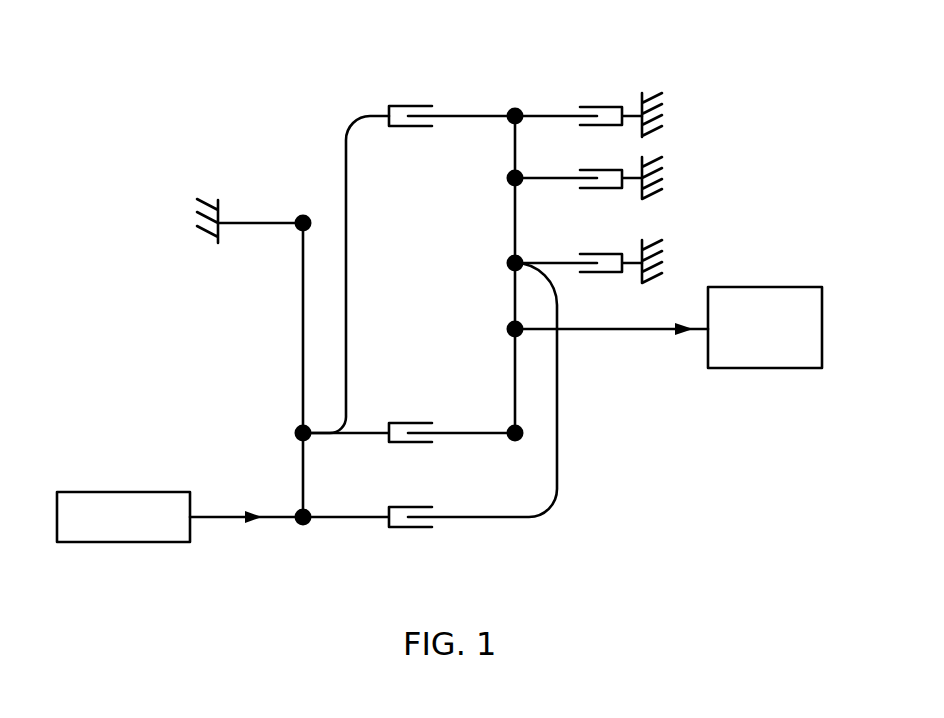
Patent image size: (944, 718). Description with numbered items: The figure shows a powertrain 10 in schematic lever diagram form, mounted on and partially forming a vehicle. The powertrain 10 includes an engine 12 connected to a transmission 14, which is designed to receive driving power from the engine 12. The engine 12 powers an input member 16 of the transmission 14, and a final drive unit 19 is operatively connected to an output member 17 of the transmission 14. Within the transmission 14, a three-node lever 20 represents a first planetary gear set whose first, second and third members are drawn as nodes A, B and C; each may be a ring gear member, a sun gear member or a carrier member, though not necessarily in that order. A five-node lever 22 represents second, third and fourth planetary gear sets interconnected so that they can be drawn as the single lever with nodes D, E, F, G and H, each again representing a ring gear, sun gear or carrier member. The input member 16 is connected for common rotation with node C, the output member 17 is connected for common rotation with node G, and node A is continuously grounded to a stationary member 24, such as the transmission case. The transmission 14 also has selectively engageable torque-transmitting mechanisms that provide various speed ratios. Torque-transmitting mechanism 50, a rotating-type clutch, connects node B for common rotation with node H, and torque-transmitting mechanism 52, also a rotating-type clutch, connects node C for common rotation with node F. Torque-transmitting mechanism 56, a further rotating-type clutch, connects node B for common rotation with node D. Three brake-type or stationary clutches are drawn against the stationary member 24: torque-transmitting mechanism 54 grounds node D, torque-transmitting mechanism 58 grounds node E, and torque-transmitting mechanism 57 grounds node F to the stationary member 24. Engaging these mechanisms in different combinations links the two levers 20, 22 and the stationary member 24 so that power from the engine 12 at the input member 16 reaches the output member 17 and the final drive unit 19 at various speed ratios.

The powertrain 10 is at (277, 105).
The engine 12 is at (148, 490).
The transmission 14 is at (403, 75).
The input member 16 is at (278, 515).
The output member 17 is at (643, 332).
The final drive unit 19 is at (792, 287).
The three-node lever 20 is at (300, 318).
The five-node lever 22 is at (513, 223).
The stationary member 24 is at (208, 206).
The torque-transmitting mechanism 50 is at (433, 438).
The torque-transmitting mechanism 52 is at (434, 520).
The torque-transmitting mechanism 54 is at (586, 110).
The torque-transmitting mechanism 56 is at (436, 108).
The torque-transmitting mechanism 57 is at (569, 273).
The torque-transmitting mechanism 58 is at (571, 189).
The node A is at (300, 214).
The node B is at (297, 427).
The node C is at (302, 526).
The node D is at (515, 107).
The node E is at (507, 178).
The node F is at (517, 256).
The node G is at (507, 332).
The node H is at (519, 440).